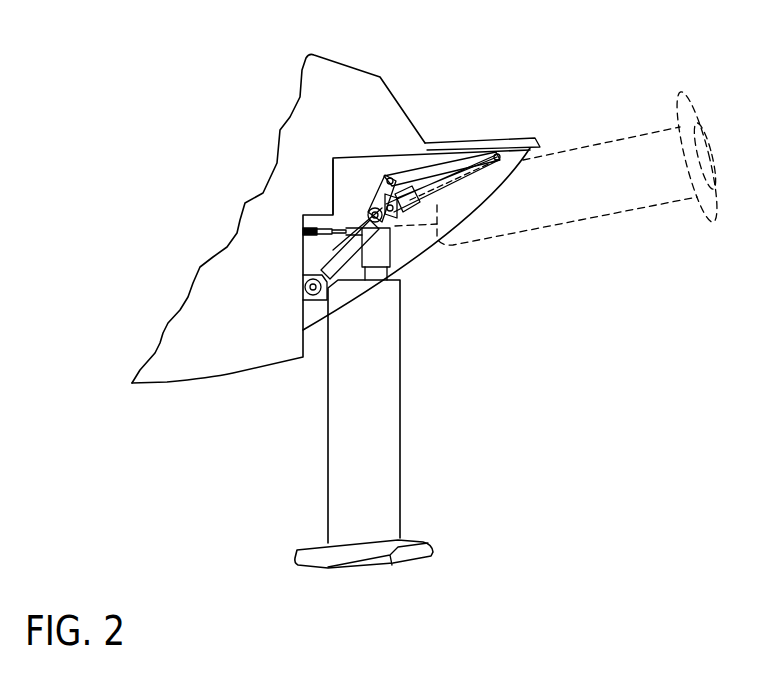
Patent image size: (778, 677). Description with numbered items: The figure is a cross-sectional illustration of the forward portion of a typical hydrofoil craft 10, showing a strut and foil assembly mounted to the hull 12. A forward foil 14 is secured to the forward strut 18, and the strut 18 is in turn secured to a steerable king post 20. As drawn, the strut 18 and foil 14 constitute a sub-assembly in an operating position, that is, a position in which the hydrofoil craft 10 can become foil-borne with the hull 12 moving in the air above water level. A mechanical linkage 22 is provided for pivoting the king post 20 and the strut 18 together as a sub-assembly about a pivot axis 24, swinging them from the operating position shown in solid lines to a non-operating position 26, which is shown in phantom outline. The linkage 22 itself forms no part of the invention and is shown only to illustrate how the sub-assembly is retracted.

The hydrofoil craft 10 is at (388, 48).
The hull 12 is at (157, 352).
The forward foil 14 is at (401, 547).
The forward strut 18 is at (400, 458).
The steerable king post 20 is at (381, 254).
The linkage 22 is at (333, 183).
The pivot axis 24 is at (371, 210).
The non-operating position 26 is at (582, 224).